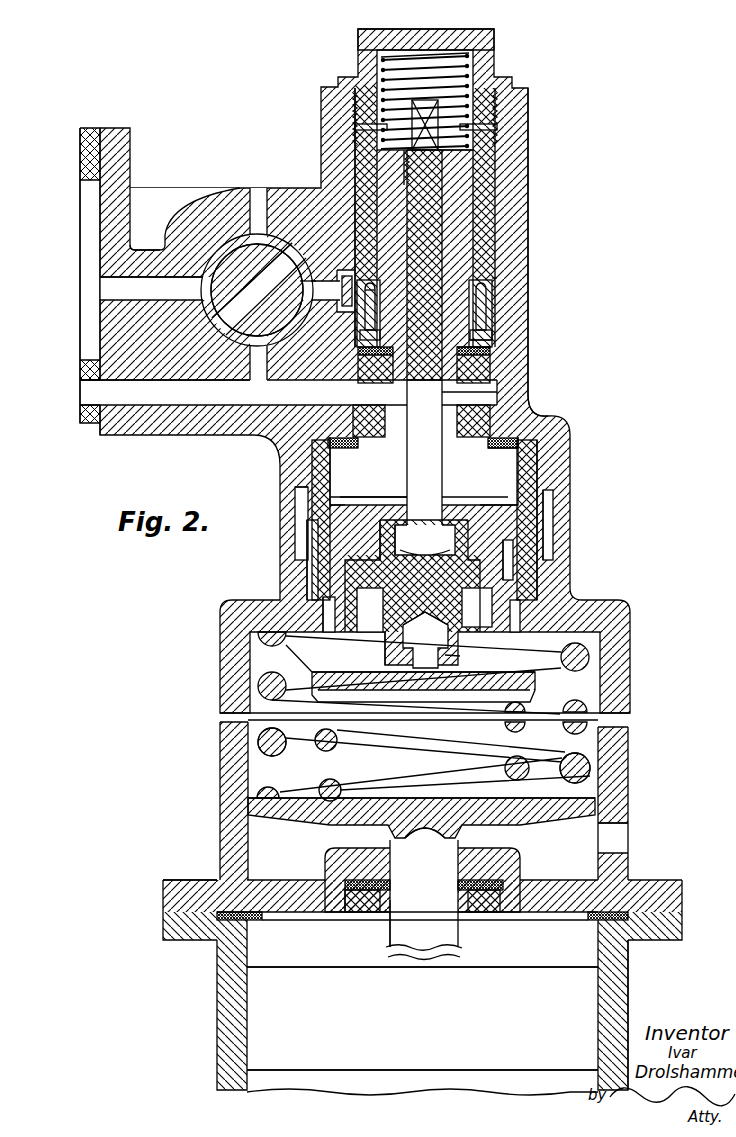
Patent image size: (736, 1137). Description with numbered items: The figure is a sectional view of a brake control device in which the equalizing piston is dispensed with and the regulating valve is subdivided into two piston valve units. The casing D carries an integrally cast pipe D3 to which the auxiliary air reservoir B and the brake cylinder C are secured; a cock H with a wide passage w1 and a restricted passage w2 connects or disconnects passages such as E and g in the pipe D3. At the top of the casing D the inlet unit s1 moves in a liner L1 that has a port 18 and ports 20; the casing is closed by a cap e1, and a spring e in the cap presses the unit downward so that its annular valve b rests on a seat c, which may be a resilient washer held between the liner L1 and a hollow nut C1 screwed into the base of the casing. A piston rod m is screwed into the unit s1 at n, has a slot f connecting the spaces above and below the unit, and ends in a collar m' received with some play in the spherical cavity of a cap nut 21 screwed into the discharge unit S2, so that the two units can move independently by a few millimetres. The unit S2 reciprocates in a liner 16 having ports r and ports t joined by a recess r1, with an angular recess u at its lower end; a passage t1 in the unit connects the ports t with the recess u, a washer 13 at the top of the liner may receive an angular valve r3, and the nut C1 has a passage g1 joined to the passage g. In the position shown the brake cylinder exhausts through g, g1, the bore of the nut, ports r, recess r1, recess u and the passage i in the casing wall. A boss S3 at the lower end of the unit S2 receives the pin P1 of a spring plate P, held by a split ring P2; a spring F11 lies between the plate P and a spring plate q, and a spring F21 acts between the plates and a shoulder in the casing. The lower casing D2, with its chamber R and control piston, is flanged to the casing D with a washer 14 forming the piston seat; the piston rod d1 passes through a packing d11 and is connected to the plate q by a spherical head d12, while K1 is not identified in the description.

The cap e1 is at (486, 46).
The spring e is at (466, 122).
The casing D is at (520, 152).
The screw connection n is at (443, 170).
The inlet unit s1 is at (460, 197).
The piston rod m is at (494, 213).
The ports 20 is at (500, 297).
The slot f is at (445, 298).
The annular valve b is at (493, 339).
The seat c is at (476, 355).
The passage g1 is at (485, 395).
The hollow nut C1 is at (490, 430).
The liner 16 is at (530, 470).
The recess r1 is at (553, 504).
The discharge unit S2 is at (503, 512).
The collar m' is at (518, 548).
The passage t1 is at (513, 583).
The pin P1 is at (448, 614).
The split ring P2 is at (445, 655).
The spring plate P is at (530, 685).
The spring F21 is at (580, 768).
The passage i is at (620, 838).
The casing D2 is at (612, 1004).
The chamber K1 is at (525, 975).
The piston rod d1 is at (455, 943).
The packing d11 is at (390, 906).
The washer 14 is at (217, 935).
The chamber R is at (262, 1082).
The spherical head d12 is at (420, 838).
The spring plate q is at (248, 805).
The spring F11 is at (330, 790).
The boss S3 is at (405, 625).
The angular recess u is at (318, 602).
The ports t is at (310, 550).
The ports r is at (330, 497).
The port 18 is at (312, 403).
The angular valve r3 is at (336, 496).
The cap nut 21 is at (373, 513).
The washer 13 is at (505, 449).
The wide passage w1 is at (232, 305).
The restricted passage w2 is at (262, 307).
The passage g is at (143, 390).
The brake cylinder C is at (90, 392).
The passage E is at (118, 288).
The auxiliary air reservoir B is at (88, 253).
The pipe D3 is at (137, 258).
The cock H is at (248, 262).
The liner L1 is at (360, 168).